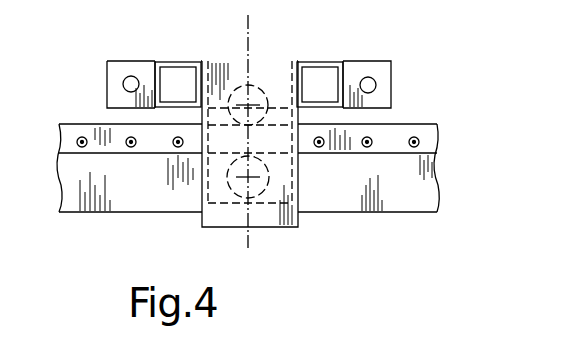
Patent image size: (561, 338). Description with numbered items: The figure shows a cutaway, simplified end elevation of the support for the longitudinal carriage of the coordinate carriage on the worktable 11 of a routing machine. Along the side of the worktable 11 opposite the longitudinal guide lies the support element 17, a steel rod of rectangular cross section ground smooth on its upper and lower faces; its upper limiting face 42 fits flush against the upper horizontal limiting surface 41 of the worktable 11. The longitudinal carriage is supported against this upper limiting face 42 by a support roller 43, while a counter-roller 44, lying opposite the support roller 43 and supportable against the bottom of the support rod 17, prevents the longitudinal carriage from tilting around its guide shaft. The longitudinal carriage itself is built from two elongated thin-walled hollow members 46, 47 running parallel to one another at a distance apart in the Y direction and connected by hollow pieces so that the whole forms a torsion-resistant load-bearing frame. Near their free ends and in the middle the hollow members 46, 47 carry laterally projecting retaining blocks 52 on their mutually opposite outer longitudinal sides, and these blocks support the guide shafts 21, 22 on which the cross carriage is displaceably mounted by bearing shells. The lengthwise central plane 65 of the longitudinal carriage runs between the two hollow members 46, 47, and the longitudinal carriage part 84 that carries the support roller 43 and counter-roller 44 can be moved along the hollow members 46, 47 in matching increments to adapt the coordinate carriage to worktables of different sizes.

The worktable 11 is at (348, 190).
The support element 17 is at (393, 146).
The guide shaft 21 is at (123, 83).
The guide shaft 22 is at (376, 84).
The upper horizontal limiting surface 41 is at (397, 125).
The upper limiting face 42 is at (275, 150).
The support roller 43 is at (254, 86).
The counter-roller 44 is at (262, 190).
The hollow member 46 is at (179, 65).
The hollow member 47 is at (320, 65).
The retaining block 52 is at (126, 70).
The lengthwise central plane 65 is at (248, 46).
The longitudinal carriage part 84 is at (218, 228).